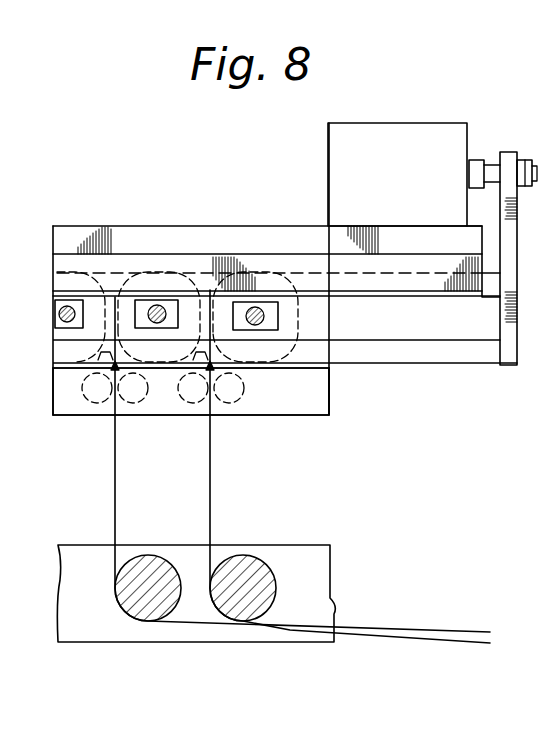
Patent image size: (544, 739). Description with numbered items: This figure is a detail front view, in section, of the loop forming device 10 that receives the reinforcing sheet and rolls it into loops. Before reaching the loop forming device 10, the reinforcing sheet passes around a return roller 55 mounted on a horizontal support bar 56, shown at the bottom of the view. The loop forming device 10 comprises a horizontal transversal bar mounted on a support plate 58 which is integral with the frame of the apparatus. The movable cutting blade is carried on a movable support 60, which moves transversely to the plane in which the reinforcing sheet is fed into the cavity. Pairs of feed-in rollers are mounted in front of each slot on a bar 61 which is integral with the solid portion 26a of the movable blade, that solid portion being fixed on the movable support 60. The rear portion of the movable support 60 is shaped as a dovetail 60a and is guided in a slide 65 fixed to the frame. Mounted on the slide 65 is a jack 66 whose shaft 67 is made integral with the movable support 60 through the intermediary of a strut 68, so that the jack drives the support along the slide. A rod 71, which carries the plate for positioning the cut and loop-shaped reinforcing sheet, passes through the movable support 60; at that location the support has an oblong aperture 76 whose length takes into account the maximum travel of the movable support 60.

The loop forming device 10 is at (293, 429).
The solid portion of the movable blade 26a is at (330, 369).
The return roller 55 is at (147, 570).
The horizontal support bar 56 is at (78, 552).
The support plate 58 is at (130, 237).
The movable support 60 is at (447, 362).
The dovetail 60a is at (487, 293).
The bar 61 is at (330, 408).
The slide 65 is at (422, 268).
The jack 66 is at (437, 135).
The shaft 67 is at (479, 168).
The strut 68 is at (509, 354).
The rod 71 is at (56, 312).
The oblong aperture 76 is at (248, 318).